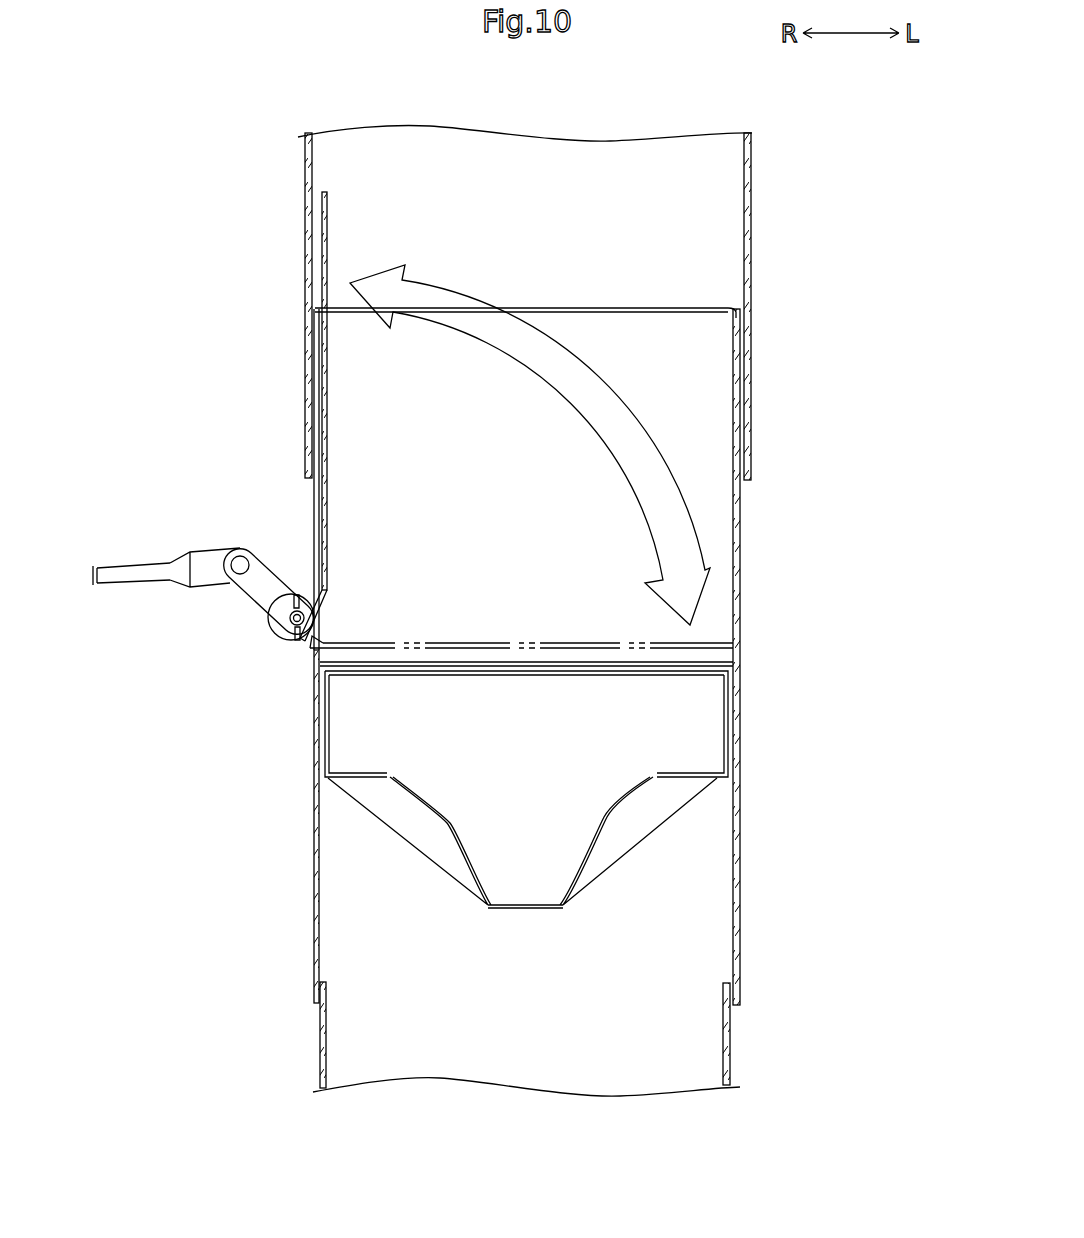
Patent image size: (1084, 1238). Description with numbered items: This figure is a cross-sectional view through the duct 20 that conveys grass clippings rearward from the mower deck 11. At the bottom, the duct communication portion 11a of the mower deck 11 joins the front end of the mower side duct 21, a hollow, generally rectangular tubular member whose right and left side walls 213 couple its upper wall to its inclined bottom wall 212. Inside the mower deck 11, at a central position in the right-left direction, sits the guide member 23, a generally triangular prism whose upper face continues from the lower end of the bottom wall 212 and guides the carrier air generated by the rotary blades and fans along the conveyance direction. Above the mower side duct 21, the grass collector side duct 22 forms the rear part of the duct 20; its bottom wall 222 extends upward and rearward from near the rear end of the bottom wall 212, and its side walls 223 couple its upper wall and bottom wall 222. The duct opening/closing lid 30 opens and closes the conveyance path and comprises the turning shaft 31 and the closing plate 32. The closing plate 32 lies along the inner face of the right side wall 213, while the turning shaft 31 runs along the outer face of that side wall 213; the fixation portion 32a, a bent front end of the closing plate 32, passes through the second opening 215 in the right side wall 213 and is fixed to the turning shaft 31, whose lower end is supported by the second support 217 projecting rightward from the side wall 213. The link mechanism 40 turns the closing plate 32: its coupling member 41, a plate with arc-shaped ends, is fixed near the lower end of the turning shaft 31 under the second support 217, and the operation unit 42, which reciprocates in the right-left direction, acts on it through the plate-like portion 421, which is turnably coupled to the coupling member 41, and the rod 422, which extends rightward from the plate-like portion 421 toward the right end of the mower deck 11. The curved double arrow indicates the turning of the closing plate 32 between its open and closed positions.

The mower deck 11 is at (746, 1032).
The duct communication portion 11a is at (322, 1046).
The duct 20 is at (273, 228).
The mower side duct 21 is at (754, 836).
The grass collector side duct 22 is at (762, 229).
The guide member 23 is at (503, 790).
The duct opening/closing lid 30 is at (347, 261).
The turning shaft 31 is at (282, 626).
The closing plate 32 is at (328, 235).
The fixation portion 32a is at (303, 630).
The link mechanism 40 is at (202, 502).
The coupling member 41 is at (268, 560).
The operation unit 42 is at (166, 528).
The bottom wall 212 is at (665, 396).
The side walls 213 is at (750, 896).
The second opening 215 is at (300, 593).
The second support 217 is at (278, 633).
The bottom wall 222 is at (660, 183).
The side walls 223 is at (757, 262).
The plate-like portion 421 is at (204, 552).
The rod 422 is at (127, 550).